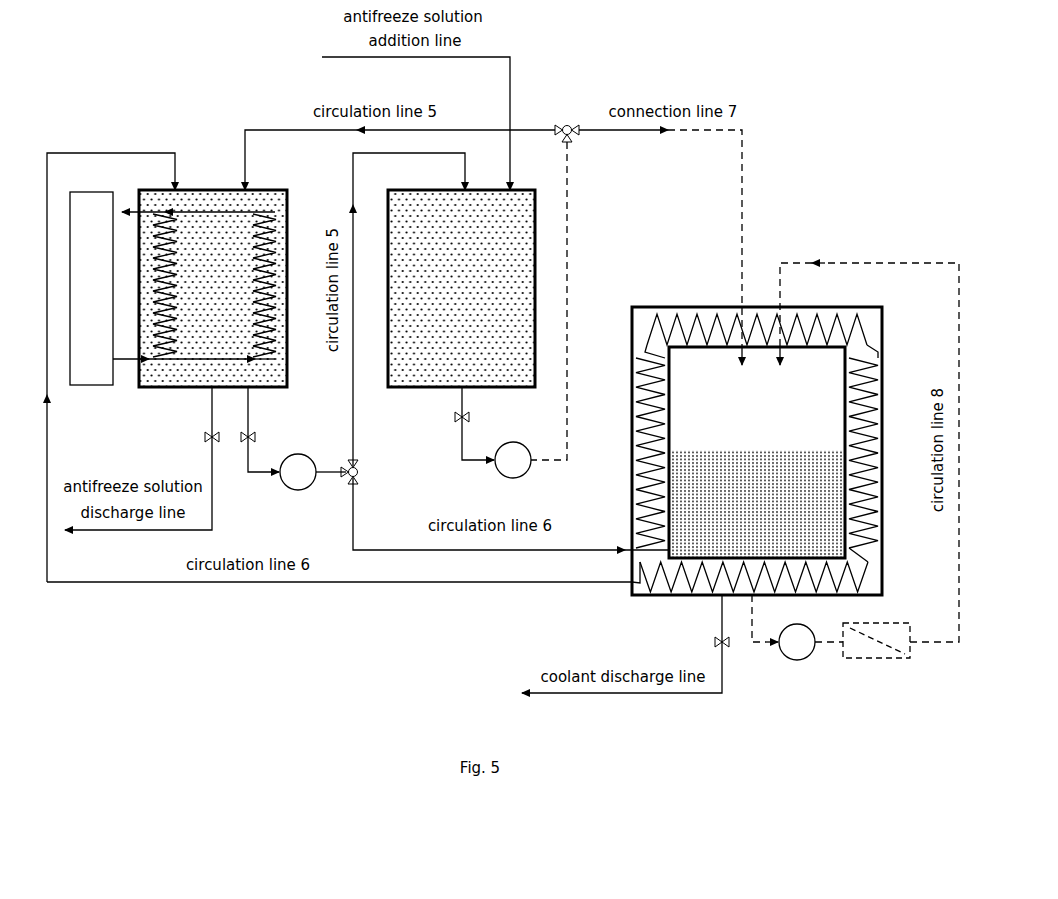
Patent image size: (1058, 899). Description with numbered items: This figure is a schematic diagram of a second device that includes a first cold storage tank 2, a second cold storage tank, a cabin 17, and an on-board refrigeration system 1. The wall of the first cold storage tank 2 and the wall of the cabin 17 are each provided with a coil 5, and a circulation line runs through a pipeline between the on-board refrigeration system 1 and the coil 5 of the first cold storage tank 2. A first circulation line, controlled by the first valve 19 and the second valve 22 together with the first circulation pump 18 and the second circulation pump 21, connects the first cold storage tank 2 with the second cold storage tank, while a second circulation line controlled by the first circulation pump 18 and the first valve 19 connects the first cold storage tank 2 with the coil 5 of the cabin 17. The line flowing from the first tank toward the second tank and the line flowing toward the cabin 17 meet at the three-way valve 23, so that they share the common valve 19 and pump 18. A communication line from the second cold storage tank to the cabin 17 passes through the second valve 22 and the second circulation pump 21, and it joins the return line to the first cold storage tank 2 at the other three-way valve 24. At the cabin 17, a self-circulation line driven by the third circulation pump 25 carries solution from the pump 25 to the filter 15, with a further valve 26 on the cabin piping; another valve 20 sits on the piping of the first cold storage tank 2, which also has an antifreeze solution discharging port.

The on-board refrigeration system 1 is at (91, 288).
The first cold storage tank 2 is at (337, 288).
The coil 5 is at (290, 214).
The filter 15 is at (876, 656).
The cabin 17 is at (757, 452).
The first circulation pump 18 is at (298, 472).
The first valve 19 is at (261, 437).
The valve 20 is at (194, 437).
The second circulation pump 21 is at (513, 460).
The second valve 22 is at (477, 417).
The three-way valve 23 is at (367, 472).
The three-way valve 24 is at (567, 119).
The third circulation pump 25 is at (797, 642).
The valve 26 is at (705, 642).